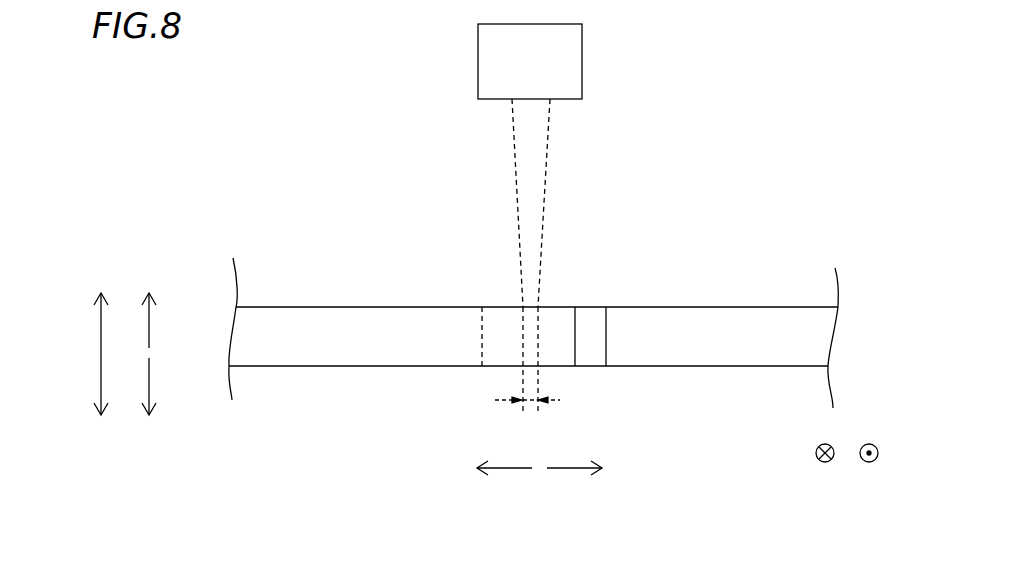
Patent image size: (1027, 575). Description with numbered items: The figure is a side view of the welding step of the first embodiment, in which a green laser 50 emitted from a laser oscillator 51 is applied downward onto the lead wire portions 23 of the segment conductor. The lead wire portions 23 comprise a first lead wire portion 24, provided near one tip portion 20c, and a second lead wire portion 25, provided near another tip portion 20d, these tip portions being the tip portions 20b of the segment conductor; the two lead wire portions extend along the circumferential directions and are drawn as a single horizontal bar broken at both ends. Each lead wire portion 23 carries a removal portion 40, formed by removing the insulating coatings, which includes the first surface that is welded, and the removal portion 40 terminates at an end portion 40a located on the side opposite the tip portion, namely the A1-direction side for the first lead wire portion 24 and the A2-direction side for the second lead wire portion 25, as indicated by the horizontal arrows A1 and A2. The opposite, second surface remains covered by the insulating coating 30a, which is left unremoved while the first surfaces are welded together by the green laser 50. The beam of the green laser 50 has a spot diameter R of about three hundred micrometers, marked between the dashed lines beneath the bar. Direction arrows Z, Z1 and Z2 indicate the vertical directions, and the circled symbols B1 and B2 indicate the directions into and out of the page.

The laser oscillator 51 is at (582, 61).
The green laser 50 is at (548, 173).
The lead wire portion 23 is at (534, 328).
The first lead wire portion 24 is at (786, 323).
The second lead wire portion 25 is at (388, 318).
The tip portion 20b is at (533, 280).
The tip portion 20c is at (476, 320).
The tip portion 20d is at (579, 323).
The insulating coating 30a is at (507, 352).
The removal portion 40 is at (655, 350).
The end portion 40a is at (613, 320).
The spot diameter R is at (523, 403).
The A1 direction A1 is at (574, 484).
The A2 direction A2 is at (504, 484).
The thickness direction Z is at (93, 354).
The upward direction Z1 is at (132, 320).
The downward direction Z2 is at (132, 386).
The depth direction (into page) B1 is at (827, 471).
The depth direction (out of page) B2 is at (871, 471).